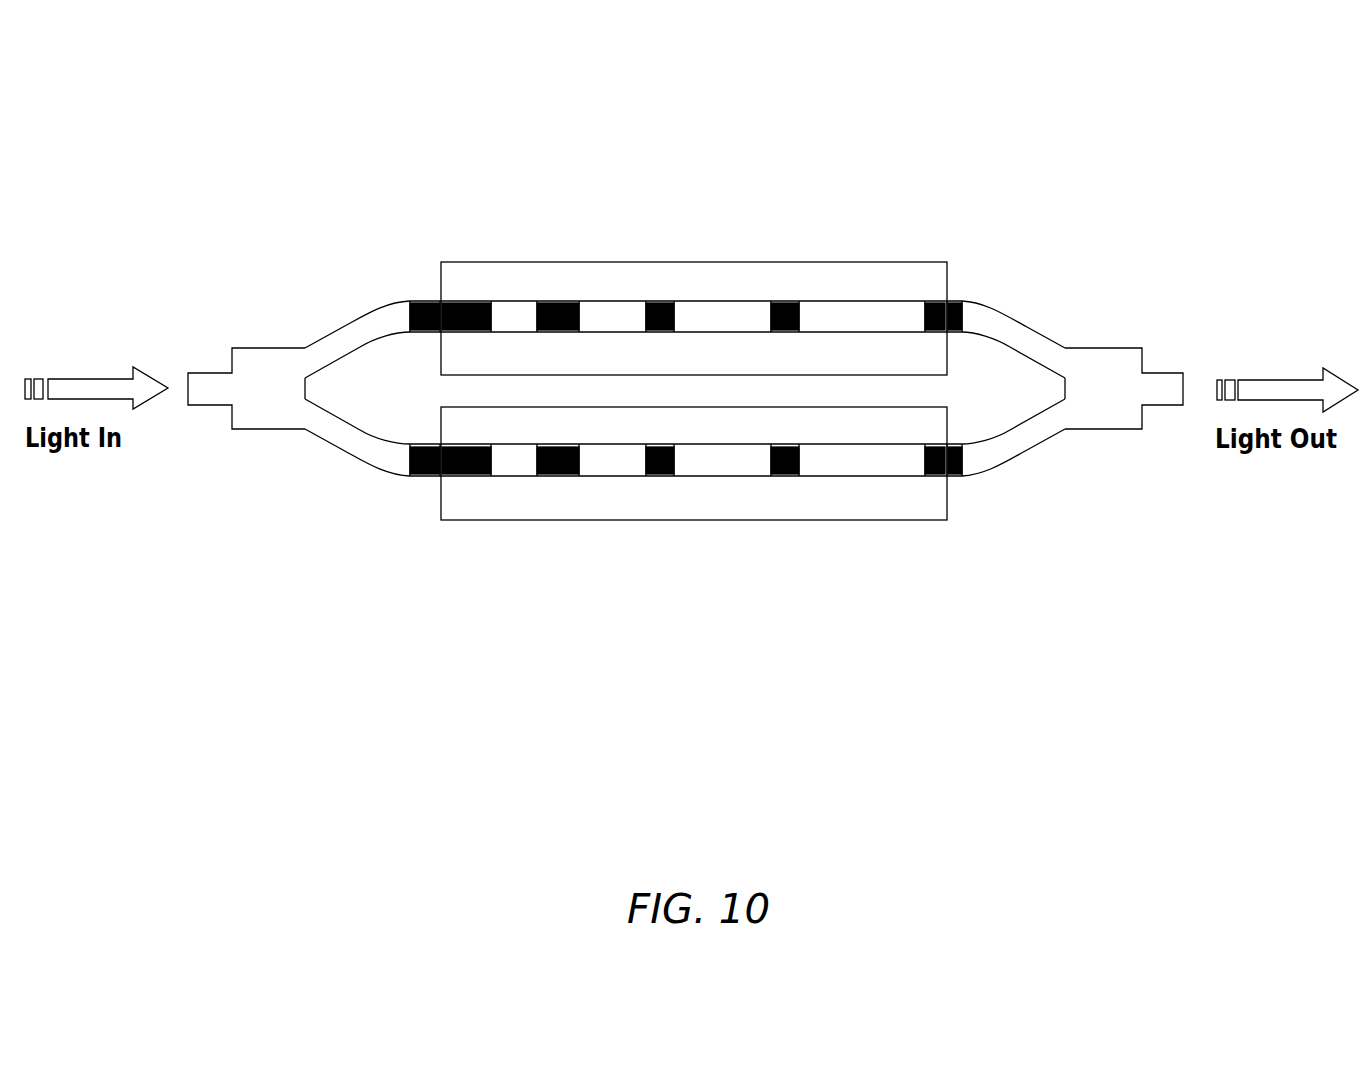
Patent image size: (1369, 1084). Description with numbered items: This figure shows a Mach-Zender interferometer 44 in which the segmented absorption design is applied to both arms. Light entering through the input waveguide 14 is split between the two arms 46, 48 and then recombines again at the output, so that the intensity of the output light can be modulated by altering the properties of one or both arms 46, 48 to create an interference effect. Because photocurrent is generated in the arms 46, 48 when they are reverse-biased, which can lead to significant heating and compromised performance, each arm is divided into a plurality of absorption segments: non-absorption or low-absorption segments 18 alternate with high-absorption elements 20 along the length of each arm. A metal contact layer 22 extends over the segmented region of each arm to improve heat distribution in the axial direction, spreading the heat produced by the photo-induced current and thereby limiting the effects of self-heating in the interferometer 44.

The waveguide 14 is at (248, 432).
The low-absorption segments 18 is at (928, 301).
The high-absorption elements 20 is at (515, 333).
The metal contact layer 22 is at (875, 263).
The Mach-Zender interferometer 44 is at (685, 403).
The first arm 46 is at (347, 327).
The second arm 48 is at (350, 455).